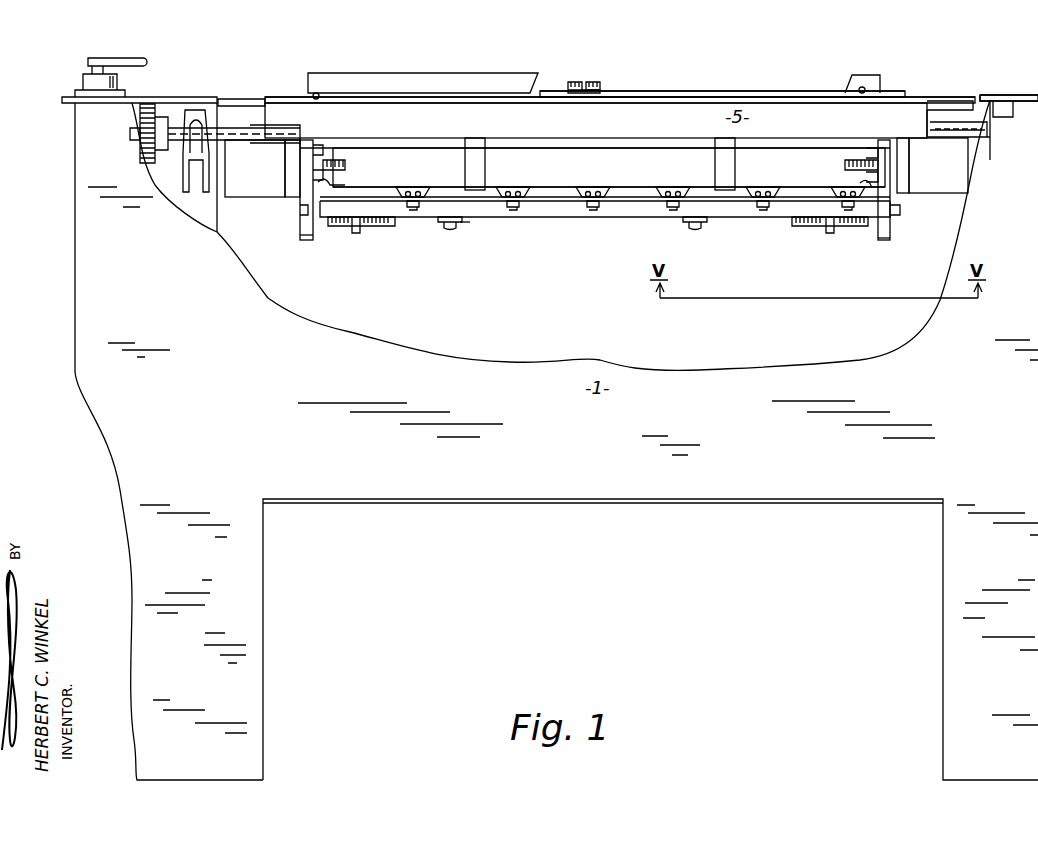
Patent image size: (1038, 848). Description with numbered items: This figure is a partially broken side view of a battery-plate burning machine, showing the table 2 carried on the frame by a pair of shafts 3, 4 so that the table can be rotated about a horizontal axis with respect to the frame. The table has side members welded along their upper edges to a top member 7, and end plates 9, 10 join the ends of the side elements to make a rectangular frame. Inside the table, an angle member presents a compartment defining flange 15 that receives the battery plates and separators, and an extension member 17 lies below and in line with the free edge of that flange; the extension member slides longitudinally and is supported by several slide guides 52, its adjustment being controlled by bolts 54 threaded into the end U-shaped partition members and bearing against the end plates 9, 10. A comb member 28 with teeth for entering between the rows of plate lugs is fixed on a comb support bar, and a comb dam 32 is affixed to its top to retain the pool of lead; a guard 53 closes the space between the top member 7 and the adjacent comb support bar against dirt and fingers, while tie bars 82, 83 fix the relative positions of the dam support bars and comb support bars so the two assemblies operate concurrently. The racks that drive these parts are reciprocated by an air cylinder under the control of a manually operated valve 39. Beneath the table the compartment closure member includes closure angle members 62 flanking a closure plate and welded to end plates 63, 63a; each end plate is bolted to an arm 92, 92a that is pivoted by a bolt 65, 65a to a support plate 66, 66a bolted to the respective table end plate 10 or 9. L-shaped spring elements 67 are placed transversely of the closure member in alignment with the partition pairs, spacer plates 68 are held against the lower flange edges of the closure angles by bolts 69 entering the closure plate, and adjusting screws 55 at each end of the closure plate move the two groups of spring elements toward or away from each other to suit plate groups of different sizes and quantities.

The table 2 is at (965, 96).
The shaft 3 is at (948, 125).
The shaft 4 is at (238, 130).
The top member 7 is at (665, 100).
The end plate 9 is at (905, 192).
The end plate 10 is at (297, 197).
The compartment defining flange 15 is at (510, 147).
The extension member 17 is at (626, 172).
The comb member 28 is at (704, 70).
The comb dam 32 is at (768, 70).
The manually operated valve 39 is at (140, 62).
The slide guide 52 is at (724, 182).
The guard 53 is at (396, 90).
The bolt 54 is at (329, 160).
The adjusting screw 55 is at (380, 228).
The closure angle member 62 is at (640, 215).
The end plate 63 is at (318, 230).
The end plate 63a is at (876, 222).
The bolt 65 is at (303, 212).
The bolt 65a is at (896, 212).
The support plate 66 is at (308, 238).
The support plate 66a is at (887, 237).
The L-shaped spring element 67 is at (586, 196).
The spacer plate 68 is at (458, 222).
The bolt 69 is at (447, 228).
The tie bar 82 is at (568, 78).
The tie bar 83 is at (600, 80).
The arm 92 is at (322, 190).
The arm 92a is at (880, 198).